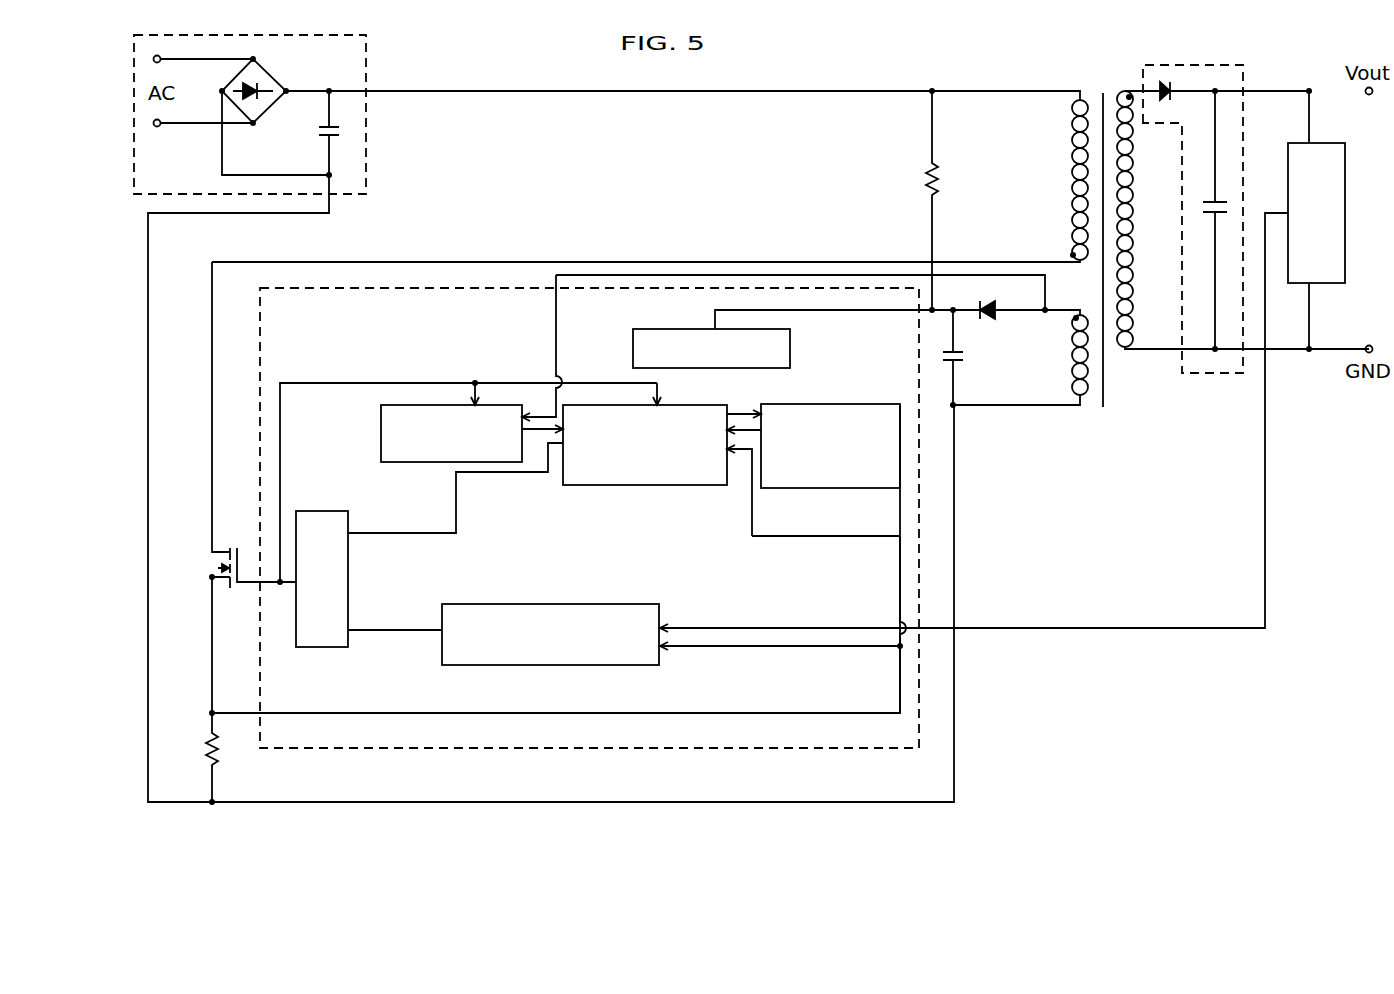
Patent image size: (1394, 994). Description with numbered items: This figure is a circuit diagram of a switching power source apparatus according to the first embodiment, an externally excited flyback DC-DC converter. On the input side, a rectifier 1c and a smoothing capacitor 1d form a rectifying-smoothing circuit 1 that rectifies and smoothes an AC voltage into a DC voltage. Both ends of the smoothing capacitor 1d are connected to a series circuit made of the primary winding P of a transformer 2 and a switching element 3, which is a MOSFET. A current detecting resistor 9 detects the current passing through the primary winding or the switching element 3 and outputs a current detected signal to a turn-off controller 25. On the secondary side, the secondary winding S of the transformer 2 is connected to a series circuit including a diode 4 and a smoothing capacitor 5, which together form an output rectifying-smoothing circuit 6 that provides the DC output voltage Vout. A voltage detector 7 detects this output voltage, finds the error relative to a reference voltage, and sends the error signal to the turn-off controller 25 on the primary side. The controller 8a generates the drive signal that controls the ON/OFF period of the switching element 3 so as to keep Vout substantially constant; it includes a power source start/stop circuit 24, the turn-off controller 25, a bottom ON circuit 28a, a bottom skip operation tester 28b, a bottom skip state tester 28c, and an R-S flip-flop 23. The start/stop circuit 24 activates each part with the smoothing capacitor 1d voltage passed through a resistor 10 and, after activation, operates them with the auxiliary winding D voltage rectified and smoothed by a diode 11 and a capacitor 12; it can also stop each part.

The rectifying-smoothing circuit 1 is at (366, 60).
The rectifier 1c is at (275, 73).
The smoothing capacitor 1d is at (320, 137).
The transformer 2 is at (1103, 93).
The switching element 3 is at (208, 567).
The diode 4 is at (1172, 100).
The smoothing capacitor 5 is at (1203, 214).
The output circuit 6 is at (1243, 116).
The voltage detector 7 is at (1345, 180).
The controller 8a is at (873, 748).
The current detecting resistor 9 is at (220, 748).
The resistor 10 is at (940, 180).
The diode 11 is at (988, 322).
The capacitor 12 is at (965, 362).
The R-S flip-flop 23 is at (322, 511).
The power source start/stop circuit 24 is at (633, 348).
The turn-off controller 25 is at (550, 665).
The bottom ON circuit 28a is at (381, 413).
The bottom skip operation tester 28b is at (645, 485).
The bottom skip state tester 28c is at (812, 488).